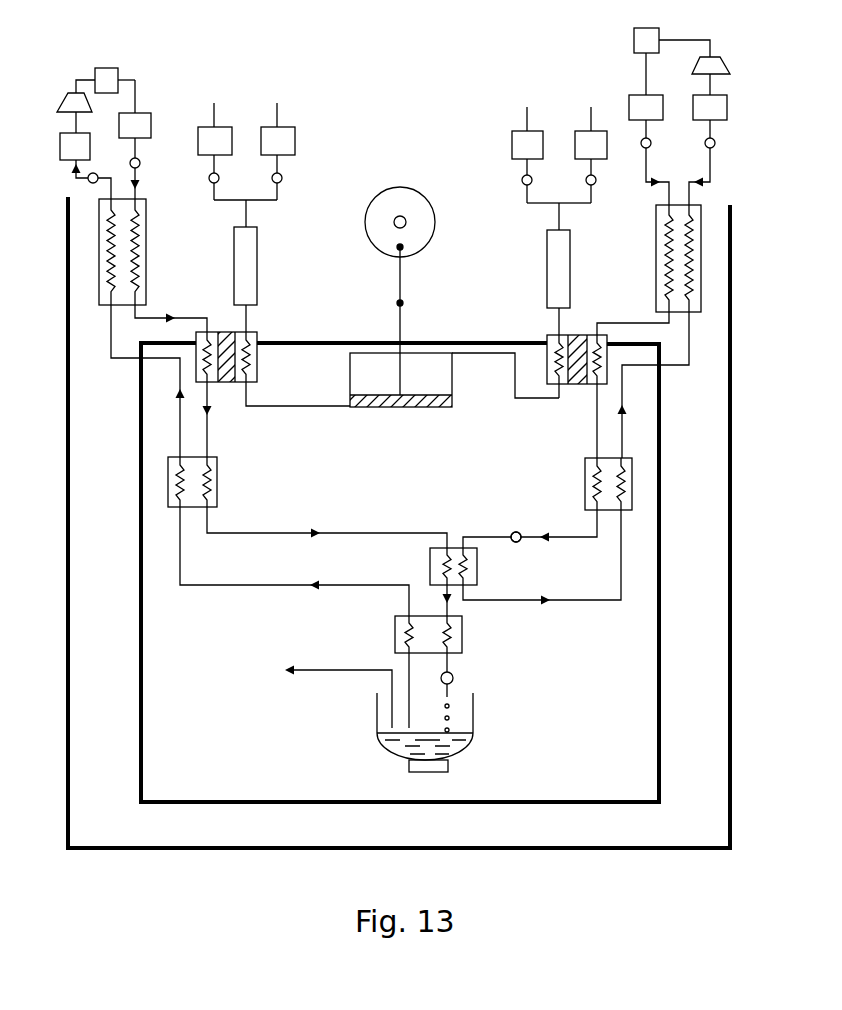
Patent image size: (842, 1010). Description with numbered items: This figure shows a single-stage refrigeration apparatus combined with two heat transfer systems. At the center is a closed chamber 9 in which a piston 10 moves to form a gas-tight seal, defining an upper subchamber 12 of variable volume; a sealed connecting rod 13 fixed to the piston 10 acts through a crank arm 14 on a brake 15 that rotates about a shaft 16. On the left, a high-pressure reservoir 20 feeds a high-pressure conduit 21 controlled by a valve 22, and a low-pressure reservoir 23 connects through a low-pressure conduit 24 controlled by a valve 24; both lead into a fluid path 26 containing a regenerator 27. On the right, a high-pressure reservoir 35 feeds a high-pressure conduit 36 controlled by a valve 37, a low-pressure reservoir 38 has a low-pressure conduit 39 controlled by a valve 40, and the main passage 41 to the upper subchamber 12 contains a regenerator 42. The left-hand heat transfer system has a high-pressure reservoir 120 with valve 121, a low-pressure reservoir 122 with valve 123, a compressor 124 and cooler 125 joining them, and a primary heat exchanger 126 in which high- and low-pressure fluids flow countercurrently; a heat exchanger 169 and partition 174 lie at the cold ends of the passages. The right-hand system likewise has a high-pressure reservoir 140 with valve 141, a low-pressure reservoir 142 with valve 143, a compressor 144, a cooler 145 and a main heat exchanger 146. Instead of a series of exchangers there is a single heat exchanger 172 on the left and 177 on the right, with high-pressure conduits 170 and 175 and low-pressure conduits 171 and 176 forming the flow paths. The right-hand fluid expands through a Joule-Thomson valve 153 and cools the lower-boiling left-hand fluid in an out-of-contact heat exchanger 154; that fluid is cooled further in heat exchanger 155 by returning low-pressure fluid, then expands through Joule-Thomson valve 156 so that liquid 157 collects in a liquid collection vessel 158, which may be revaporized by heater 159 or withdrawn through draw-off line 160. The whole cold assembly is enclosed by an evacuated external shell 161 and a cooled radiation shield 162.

The closed chamber 9 is at (350, 387).
The piston 10 is at (425, 408).
The upper subchamber 12 is at (424, 374).
The connecting rod 13 is at (406, 333).
The crank arm 14 is at (406, 290).
The brake 15 is at (413, 189).
The shaft 16 is at (407, 223).
The high-pressure reservoir 20 is at (220, 127).
The high-pressure conduit 21 is at (234, 203).
The valve 22 is at (209, 178).
The low-pressure reservoir 23 is at (283, 127).
The low-pressure conduit 24 is at (270, 202).
The fluid path 26 is at (251, 325).
The regenerator 27 is at (258, 267).
The high-pressure reservoir 35 is at (521, 131).
The high-pressure conduit 36 is at (527, 200).
The valve 37 is at (522, 180).
The low-pressure reservoir 38 is at (586, 131).
The low-pressure conduit 39 is at (580, 205).
The valve 40 is at (596, 180).
The main passage 41 is at (562, 323).
The regenerator 42 is at (565, 271).
The high-pressure reservoir 120 is at (139, 123).
The valve 121 is at (141, 164).
The low-pressure reservoir 122 is at (60, 138).
The valve 123 is at (88, 180).
The compressor 124 is at (70, 93).
The cooler 125 is at (105, 72).
The primary heat exchanger 126 is at (147, 224).
The high-pressure reservoir 140 is at (637, 95).
The high-pressure valve 141 is at (641, 142).
The low-pressure reservoir 142 is at (717, 98).
The valve 143 is at (715, 143).
The compressor 144 is at (715, 66).
The cooler 145 is at (650, 35).
The main heat exchanger 146 is at (645, 244).
The Joule-Thomson valve 153 is at (513, 532).
The out-of-contact heat exchanger 154 is at (478, 573).
The heat exchanger 155 is at (465, 641).
The Joule-Thomson valve 156 is at (455, 677).
The liquid 157 is at (460, 745).
The liquid collection vessel 158 is at (477, 716).
The heater 159 is at (440, 768).
The draw-off line 160 is at (356, 676).
The external shell 161 is at (70, 555).
The radiation shield 162 is at (465, 343).
The heat exchanger 169 is at (224, 331).
The high-pressure conduit 170 is at (210, 447).
The low-pressure fluid conduit 171 is at (178, 447).
The heat exchanger 172 is at (218, 493).
The hatched partition 174 is at (585, 386).
The high-pressure conduit 175 is at (593, 418).
The low-pressure fluid conduit 176 is at (625, 446).
The heat exchanger 177 is at (585, 471).